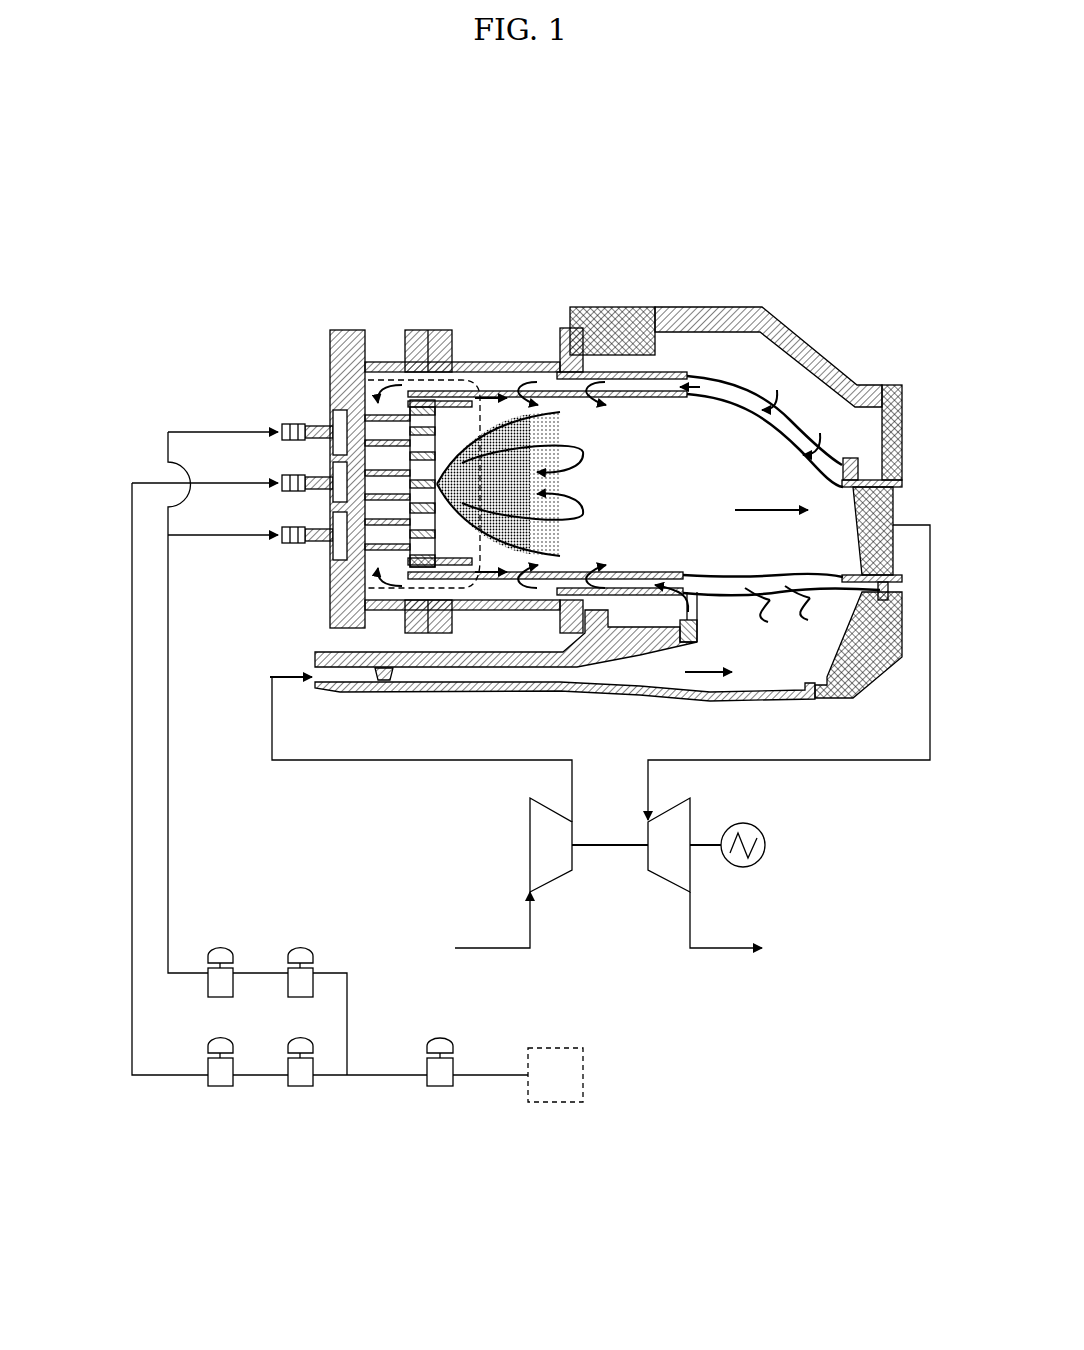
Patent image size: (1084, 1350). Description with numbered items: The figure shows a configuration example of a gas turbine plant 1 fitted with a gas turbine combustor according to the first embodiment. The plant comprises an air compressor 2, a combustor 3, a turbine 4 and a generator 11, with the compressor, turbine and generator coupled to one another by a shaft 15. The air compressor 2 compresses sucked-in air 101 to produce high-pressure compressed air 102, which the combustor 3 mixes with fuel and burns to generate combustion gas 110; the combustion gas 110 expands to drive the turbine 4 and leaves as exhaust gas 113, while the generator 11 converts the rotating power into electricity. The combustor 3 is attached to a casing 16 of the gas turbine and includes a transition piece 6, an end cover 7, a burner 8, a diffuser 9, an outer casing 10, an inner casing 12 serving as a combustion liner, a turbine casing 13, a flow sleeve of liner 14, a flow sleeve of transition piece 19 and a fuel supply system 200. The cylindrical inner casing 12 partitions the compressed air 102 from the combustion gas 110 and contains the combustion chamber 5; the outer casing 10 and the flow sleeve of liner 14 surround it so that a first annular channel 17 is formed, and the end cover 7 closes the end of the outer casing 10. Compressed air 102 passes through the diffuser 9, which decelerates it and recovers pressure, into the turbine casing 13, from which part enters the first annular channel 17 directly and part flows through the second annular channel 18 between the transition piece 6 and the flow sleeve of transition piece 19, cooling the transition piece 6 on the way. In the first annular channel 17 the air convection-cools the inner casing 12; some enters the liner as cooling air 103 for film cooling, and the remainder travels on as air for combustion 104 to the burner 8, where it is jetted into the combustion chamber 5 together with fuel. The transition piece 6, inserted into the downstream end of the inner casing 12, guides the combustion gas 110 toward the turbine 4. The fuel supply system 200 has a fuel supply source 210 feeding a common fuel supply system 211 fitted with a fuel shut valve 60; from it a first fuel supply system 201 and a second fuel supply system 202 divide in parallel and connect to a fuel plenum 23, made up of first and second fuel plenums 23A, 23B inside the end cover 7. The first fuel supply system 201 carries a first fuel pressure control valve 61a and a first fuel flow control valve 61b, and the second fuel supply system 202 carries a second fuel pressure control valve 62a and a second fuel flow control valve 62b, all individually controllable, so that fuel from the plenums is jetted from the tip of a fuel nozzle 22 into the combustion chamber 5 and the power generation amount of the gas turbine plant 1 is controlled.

The gas turbine plant 1 is at (772, 1048).
The air compressor 2 is at (552, 880).
The combustor 3 is at (815, 272).
The turbine 4 is at (660, 880).
The combustion chamber 5 is at (665, 498).
The transition piece 6 is at (788, 380).
The end cover 7 is at (345, 330).
The burner 8 is at (317, 587).
The diffuser 9 is at (650, 668).
The outer casing 10 is at (565, 372).
The generator 11 is at (770, 832).
The inner casing 12 is at (585, 355).
The turbine casing 13 is at (760, 653).
The flow sleeve of liner 14 is at (658, 372).
The shaft 15 is at (612, 848).
The casing 16 is at (842, 363).
The first annular channel 17 is at (497, 583).
The second annular channel 18 is at (790, 445).
The flow sleeve of transition piece 19 is at (740, 400).
The fuel nozzle 22 is at (330, 568).
The fuel plenum 23 is at (203, 392).
The first fuel plenum 23A is at (333, 470).
The second fuel plenum 23B is at (333, 415).
The fuel shut valve 60 is at (445, 1087).
The first fuel pressure control valve 61a is at (303, 1087).
The first fuel flow control valve 61b is at (220, 1087).
The second fuel pressure control valve 62a is at (303, 945).
The second fuel flow control valve 62b is at (225, 945).
The air 101 is at (480, 950).
The compressed air 102 is at (345, 762).
The cooling air 103 is at (610, 560).
The air for combustion 104 is at (390, 380).
The combustion gas 110 is at (757, 511).
The exhaust gas 113 is at (728, 950).
The fuel supply system 200 is at (395, 1140).
The first fuel supply system 201 is at (132, 578).
The second fuel supply system 202 is at (170, 670).
The fuel supply source 210 is at (555, 1104).
The common fuel supply system 211 is at (385, 1075).